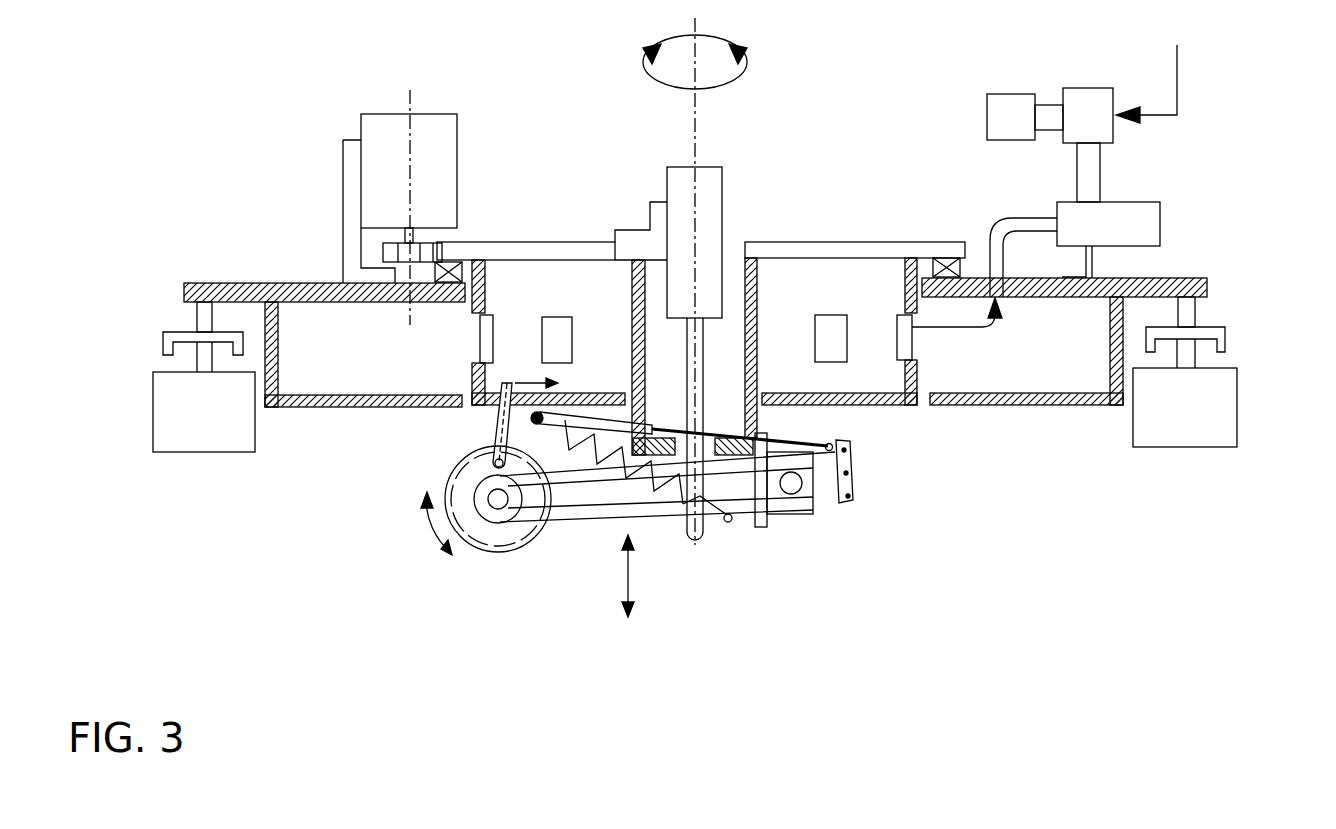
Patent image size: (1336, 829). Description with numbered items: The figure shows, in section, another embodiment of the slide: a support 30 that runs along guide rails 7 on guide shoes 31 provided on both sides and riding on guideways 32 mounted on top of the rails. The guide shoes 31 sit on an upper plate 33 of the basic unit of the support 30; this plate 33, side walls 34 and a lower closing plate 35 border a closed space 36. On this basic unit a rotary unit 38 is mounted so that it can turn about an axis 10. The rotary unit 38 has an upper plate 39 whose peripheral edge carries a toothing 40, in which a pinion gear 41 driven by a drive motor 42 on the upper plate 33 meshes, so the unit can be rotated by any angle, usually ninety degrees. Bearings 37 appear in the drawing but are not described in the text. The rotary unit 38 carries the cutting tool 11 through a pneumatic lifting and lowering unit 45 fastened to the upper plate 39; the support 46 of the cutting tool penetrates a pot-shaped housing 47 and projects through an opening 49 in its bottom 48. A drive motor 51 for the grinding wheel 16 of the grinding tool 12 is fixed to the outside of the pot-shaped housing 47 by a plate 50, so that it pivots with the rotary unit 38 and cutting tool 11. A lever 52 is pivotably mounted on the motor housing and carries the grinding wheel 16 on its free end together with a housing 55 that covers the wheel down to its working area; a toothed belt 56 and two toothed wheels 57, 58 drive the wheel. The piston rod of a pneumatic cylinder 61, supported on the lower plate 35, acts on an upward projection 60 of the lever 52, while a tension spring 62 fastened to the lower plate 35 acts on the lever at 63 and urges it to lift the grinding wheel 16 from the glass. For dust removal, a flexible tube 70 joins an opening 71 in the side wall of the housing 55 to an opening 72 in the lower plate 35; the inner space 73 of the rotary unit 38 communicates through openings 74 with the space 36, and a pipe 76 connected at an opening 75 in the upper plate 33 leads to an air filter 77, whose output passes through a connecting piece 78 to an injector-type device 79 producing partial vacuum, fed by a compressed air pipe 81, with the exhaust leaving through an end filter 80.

The guide rails 7 is at (193, 430).
The axis 10 is at (697, 198).
The cutting tool 11 is at (693, 547).
The grinding tool 12 is at (438, 610).
The grinding wheel 16 is at (502, 543).
The support 30 is at (553, 130).
The guide shoes 31 is at (195, 312).
The guideways 32 is at (195, 366).
The upper plate 33 is at (233, 283).
The side walls 34 is at (277, 370).
The lower closing plate 35 is at (297, 407).
The closed space 36 is at (978, 386).
The bearing 37 is at (447, 262).
The rotary unit 38 is at (842, 216).
The upper plate 39 is at (545, 247).
The toothing 40 is at (960, 266).
The pinion gear 41 is at (398, 252).
The drive motor 42 is at (378, 127).
The lifting and lowering unit 45 is at (677, 178).
The support 46 is at (688, 327).
The pot-shaped housing 47 is at (633, 303).
The bottom 48 is at (733, 435).
The opening 49 is at (672, 430).
The plate 50 is at (755, 530).
The drive motor 51 is at (813, 508).
The lever 52 is at (580, 515).
The housing 55 is at (445, 475).
The toothed belt 56 is at (563, 507).
The toothed wheel 57 is at (500, 505).
The toothed wheel 58 is at (795, 482).
The projection 60 is at (852, 462).
The pneumatic cylinder 61 is at (617, 470).
The tension spring 62 is at (646, 478).
The spring attachment point 63 is at (728, 522).
The flexible tube 70 is at (500, 425).
The opening 71 is at (490, 462).
The opening 72 is at (509, 383).
The inner space 73 is at (808, 289).
The openings 74 is at (815, 342).
The opening 75 is at (1005, 302).
The pipe 76 is at (1020, 222).
The air filter 77 is at (1130, 222).
The connecting piece 78 is at (1095, 170).
The device to produce partial vacuum 79 is at (1083, 112).
The end filter 80 is at (1007, 112).
The compressed air pipe 81 is at (1177, 70).